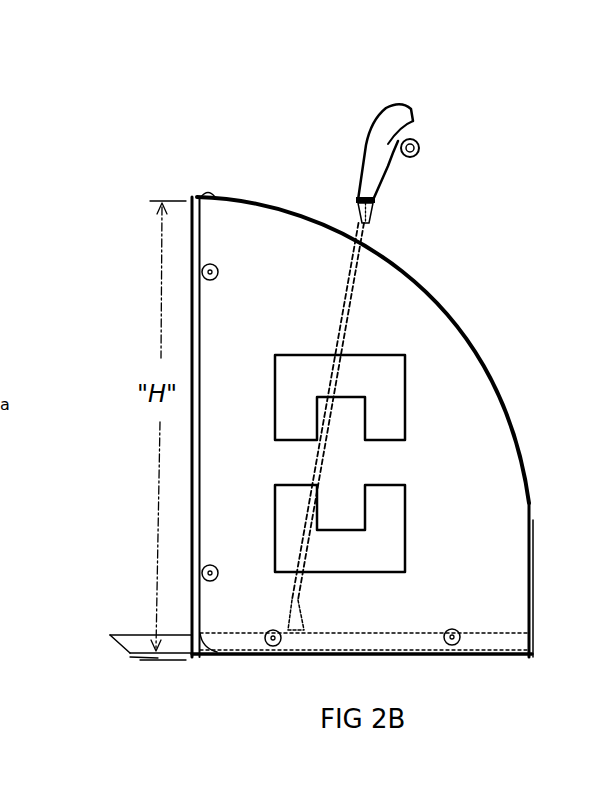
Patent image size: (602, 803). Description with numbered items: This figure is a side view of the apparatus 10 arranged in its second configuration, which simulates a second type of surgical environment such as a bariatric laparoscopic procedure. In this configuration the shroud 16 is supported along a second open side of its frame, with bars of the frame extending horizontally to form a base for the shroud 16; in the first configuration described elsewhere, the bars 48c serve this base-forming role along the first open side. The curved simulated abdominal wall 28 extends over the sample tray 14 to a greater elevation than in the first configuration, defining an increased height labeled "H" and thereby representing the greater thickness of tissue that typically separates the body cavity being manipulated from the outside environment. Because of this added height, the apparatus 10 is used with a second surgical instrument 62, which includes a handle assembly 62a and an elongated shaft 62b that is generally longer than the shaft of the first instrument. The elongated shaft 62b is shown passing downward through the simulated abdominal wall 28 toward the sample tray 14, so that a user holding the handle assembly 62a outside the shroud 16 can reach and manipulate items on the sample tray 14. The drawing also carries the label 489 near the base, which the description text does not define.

The apparatus 10 is at (495, 308).
The sample tray 14 is at (133, 638).
The shroud 16 is at (246, 186).
The simulated abdominal wall 28 is at (513, 418).
The bars 48c is at (192, 320).
The second surgical instrument 62 is at (440, 95).
The handle assembly 62a is at (418, 123).
The elongated shaft 62b is at (352, 299).
The fastener 489 is at (445, 657).